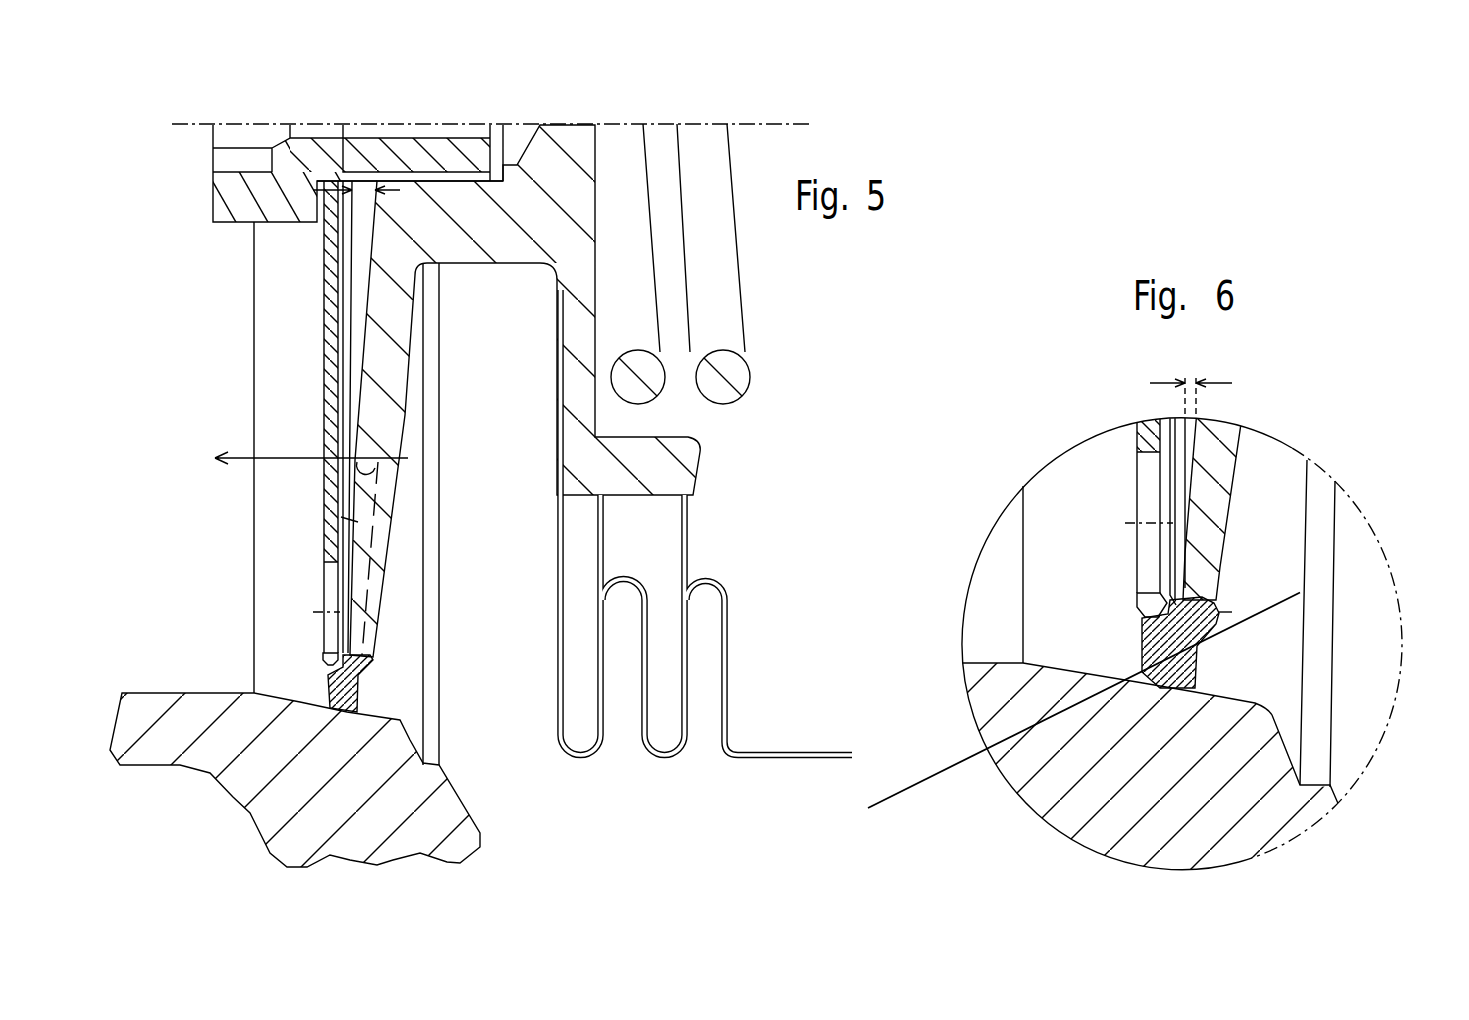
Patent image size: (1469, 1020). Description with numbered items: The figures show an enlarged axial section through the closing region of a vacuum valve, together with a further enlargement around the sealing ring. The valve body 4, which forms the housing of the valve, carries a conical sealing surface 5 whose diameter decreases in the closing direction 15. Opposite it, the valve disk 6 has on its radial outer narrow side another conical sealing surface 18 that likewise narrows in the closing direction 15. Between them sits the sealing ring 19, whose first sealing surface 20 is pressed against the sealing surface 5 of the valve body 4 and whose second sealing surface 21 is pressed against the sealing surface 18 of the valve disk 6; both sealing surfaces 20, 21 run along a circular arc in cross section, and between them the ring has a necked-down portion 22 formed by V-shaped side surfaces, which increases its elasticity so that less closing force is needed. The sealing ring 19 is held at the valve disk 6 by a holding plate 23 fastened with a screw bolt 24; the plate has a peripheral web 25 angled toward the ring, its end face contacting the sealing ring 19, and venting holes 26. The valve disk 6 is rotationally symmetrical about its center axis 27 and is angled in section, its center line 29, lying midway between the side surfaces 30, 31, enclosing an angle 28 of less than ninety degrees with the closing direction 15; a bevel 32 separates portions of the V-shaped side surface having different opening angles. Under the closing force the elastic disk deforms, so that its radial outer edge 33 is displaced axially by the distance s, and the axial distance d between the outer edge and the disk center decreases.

In FIG. 6, the valve body 4 is at (1030, 705).
In FIG. 6, the sealing surface 5 is at (1208, 701).
In FIG. 6, the valve disk 6 is at (1223, 457).
In FIG. 5, the closing direction 15 is at (287, 458).
In FIG. 6, the sealing surface 18 is at (1220, 567).
In FIG. 5, the sealing ring 19 is at (353, 707).
In FIG. 6, the sealing ring 19 is at (1195, 700).
In FIG. 6, the first sealing surface 20 is at (1138, 682).
In FIG. 6, the second sealing surface 21 is at (1203, 605).
In FIG. 6, the necked-down portion 22 is at (1300, 592).
In FIG. 5, the holding plate 23 is at (330, 282).
In FIG. 6, the holding plate 23 is at (1147, 443).
In FIG. 5, the screw bolt 24 is at (232, 200).
In FIG. 5, the peripheral web 25 is at (333, 702).
In FIG. 6, the peripheral web 25 is at (1157, 612).
In FIG. 5, the venting holes 26 is at (333, 625).
In FIG. 5, the center axis 27 is at (283, 124).
In FIG. 5, the angle 28 is at (377, 464).
In FIG. 5, the center line 29 is at (363, 557).
In FIG. 5, the side surface 30 is at (393, 523).
In FIG. 5, the side surface 31 is at (358, 522).
In FIG. 5, the bevel 32 is at (408, 402).
In FIG. 5, the radial outer edge 33 is at (365, 657).
In FIG. 6, the radial outer edge 33 is at (1068, 715).